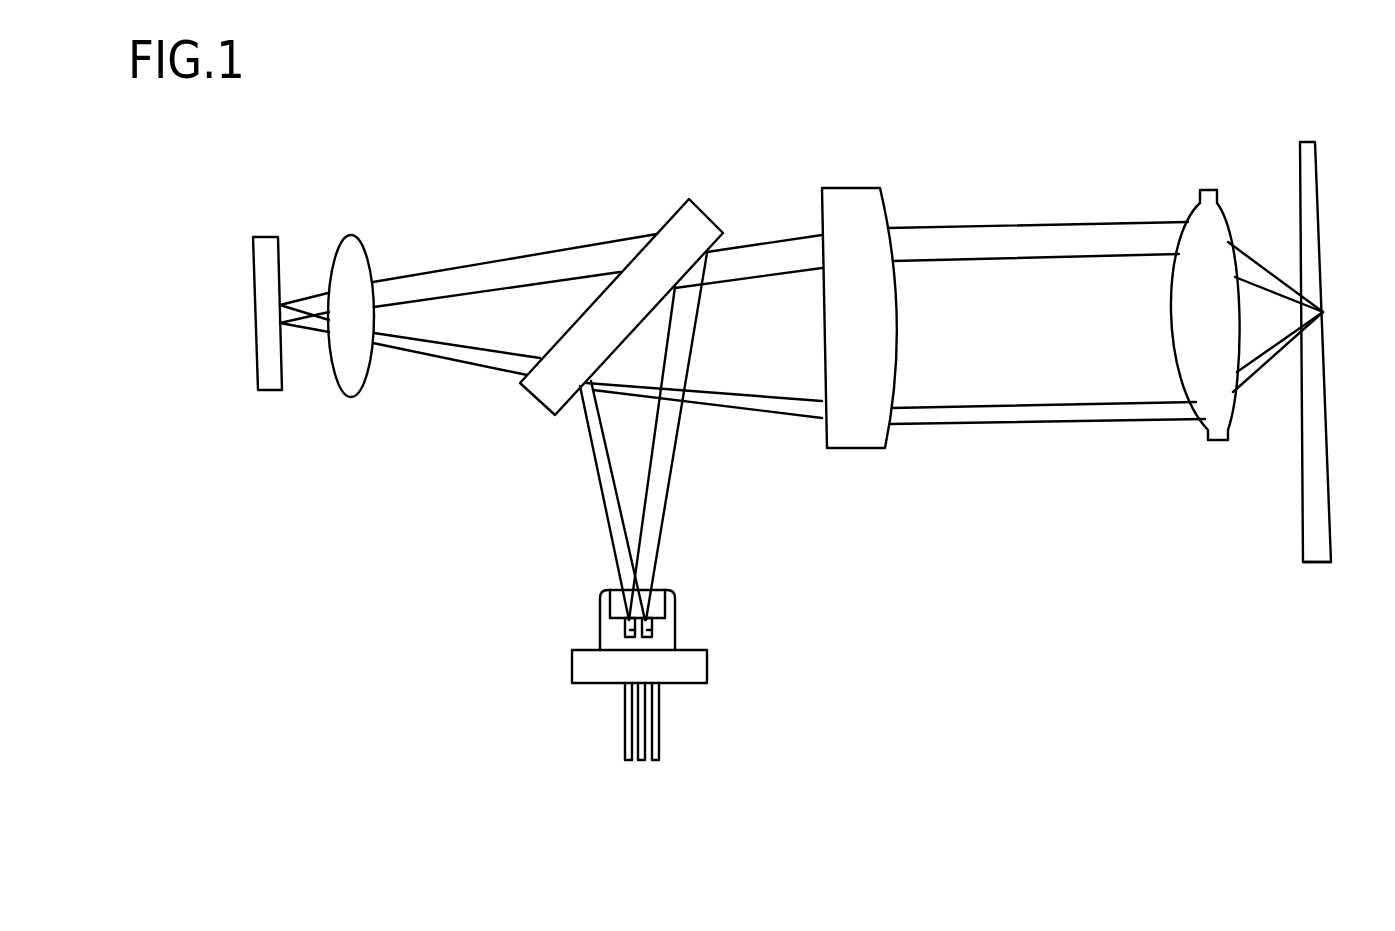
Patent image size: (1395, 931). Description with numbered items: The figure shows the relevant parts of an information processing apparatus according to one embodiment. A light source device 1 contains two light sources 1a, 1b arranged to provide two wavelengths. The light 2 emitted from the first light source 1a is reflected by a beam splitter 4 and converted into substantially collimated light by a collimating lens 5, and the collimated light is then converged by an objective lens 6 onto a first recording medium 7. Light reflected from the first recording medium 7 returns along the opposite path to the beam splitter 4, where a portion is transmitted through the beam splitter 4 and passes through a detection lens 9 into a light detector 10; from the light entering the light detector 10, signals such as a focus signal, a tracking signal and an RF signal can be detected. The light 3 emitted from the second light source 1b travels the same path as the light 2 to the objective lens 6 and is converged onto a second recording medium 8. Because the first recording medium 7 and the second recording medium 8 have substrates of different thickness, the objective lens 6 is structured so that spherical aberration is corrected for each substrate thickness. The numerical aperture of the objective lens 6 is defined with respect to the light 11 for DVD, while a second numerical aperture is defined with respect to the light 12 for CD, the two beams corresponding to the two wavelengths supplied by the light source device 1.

The light source device 1 is at (700, 707).
The light source 1a is at (653, 628).
The light source 1b is at (625, 628).
The light 2 is at (662, 528).
The light 3 is at (607, 528).
The beam splitter 4 is at (686, 220).
The collimating lens 5 is at (855, 208).
The objective lens 6 is at (1210, 198).
The first recording medium 7 is at (1308, 148).
The second recording medium 8 is at (1313, 557).
The detection lens 9 is at (352, 252).
The light detector 10 is at (265, 255).
The light for DVD 11 is at (1251, 262).
The light for CD 12 is at (1265, 370).